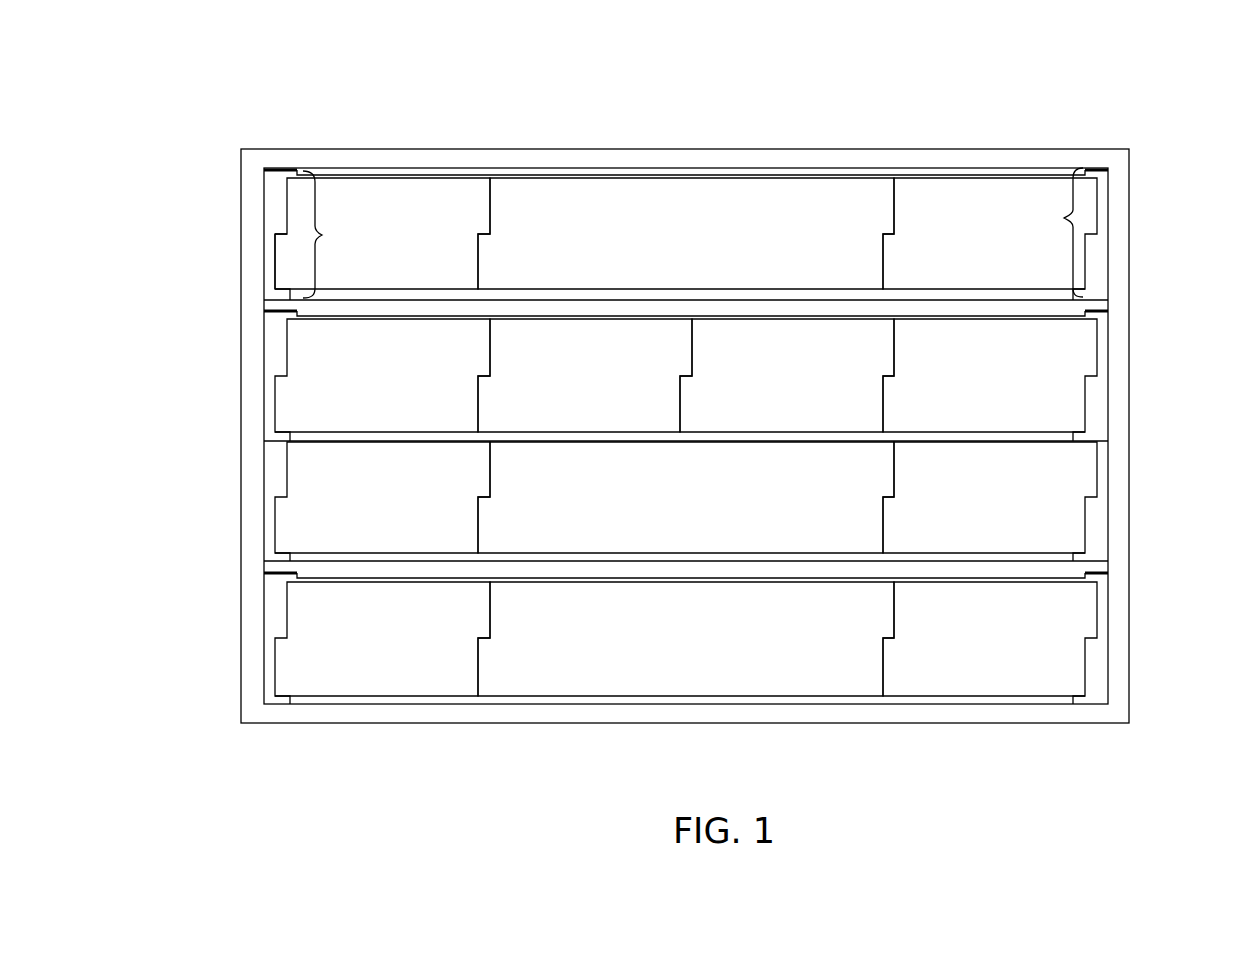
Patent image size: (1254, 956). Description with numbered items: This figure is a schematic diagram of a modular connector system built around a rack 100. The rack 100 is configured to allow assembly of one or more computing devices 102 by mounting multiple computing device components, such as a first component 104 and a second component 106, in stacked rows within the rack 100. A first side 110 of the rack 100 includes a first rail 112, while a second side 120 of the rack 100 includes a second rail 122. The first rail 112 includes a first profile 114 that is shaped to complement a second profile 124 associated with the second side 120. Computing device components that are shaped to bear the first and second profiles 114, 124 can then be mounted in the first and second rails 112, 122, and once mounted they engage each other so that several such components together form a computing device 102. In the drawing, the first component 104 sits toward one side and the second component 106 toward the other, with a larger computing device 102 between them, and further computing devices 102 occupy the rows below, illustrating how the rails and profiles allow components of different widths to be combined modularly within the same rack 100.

The rack 100 is at (719, 128).
The computing device 102 is at (710, 263).
The first component 104 is at (368, 266).
The second component 106 is at (1012, 267).
The first side 110 is at (678, 394).
The first rail 112 is at (1108, 188).
The first profile 114 is at (1064, 218).
The second side 120 is at (221, 152).
The second rail 122 is at (287, 257).
The second profile 124 is at (322, 235).